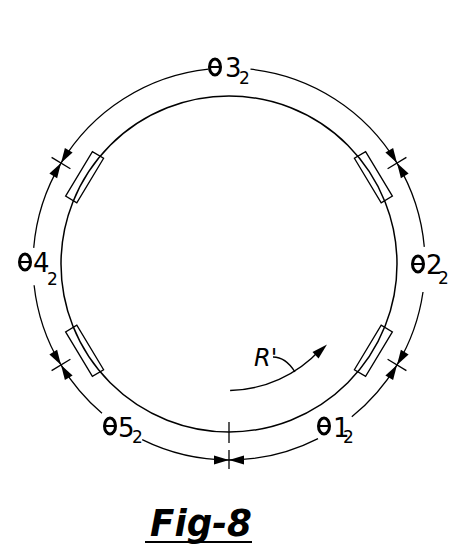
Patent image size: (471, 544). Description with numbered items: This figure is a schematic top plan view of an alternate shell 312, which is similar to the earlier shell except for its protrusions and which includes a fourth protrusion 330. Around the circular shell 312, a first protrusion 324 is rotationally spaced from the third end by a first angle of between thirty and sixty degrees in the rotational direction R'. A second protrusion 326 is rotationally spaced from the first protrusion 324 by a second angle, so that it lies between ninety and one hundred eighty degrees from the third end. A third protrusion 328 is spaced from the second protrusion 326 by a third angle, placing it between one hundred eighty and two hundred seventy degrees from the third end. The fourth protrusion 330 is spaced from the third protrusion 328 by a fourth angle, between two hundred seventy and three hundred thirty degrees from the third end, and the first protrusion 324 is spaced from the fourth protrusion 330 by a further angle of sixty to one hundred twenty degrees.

The shell 312 is at (273, 53).
The first protrusion 324 is at (368, 350).
The second protrusion 326 is at (368, 182).
The third protrusion 328 is at (90, 178).
The fourth protrusion 330 is at (87, 340).